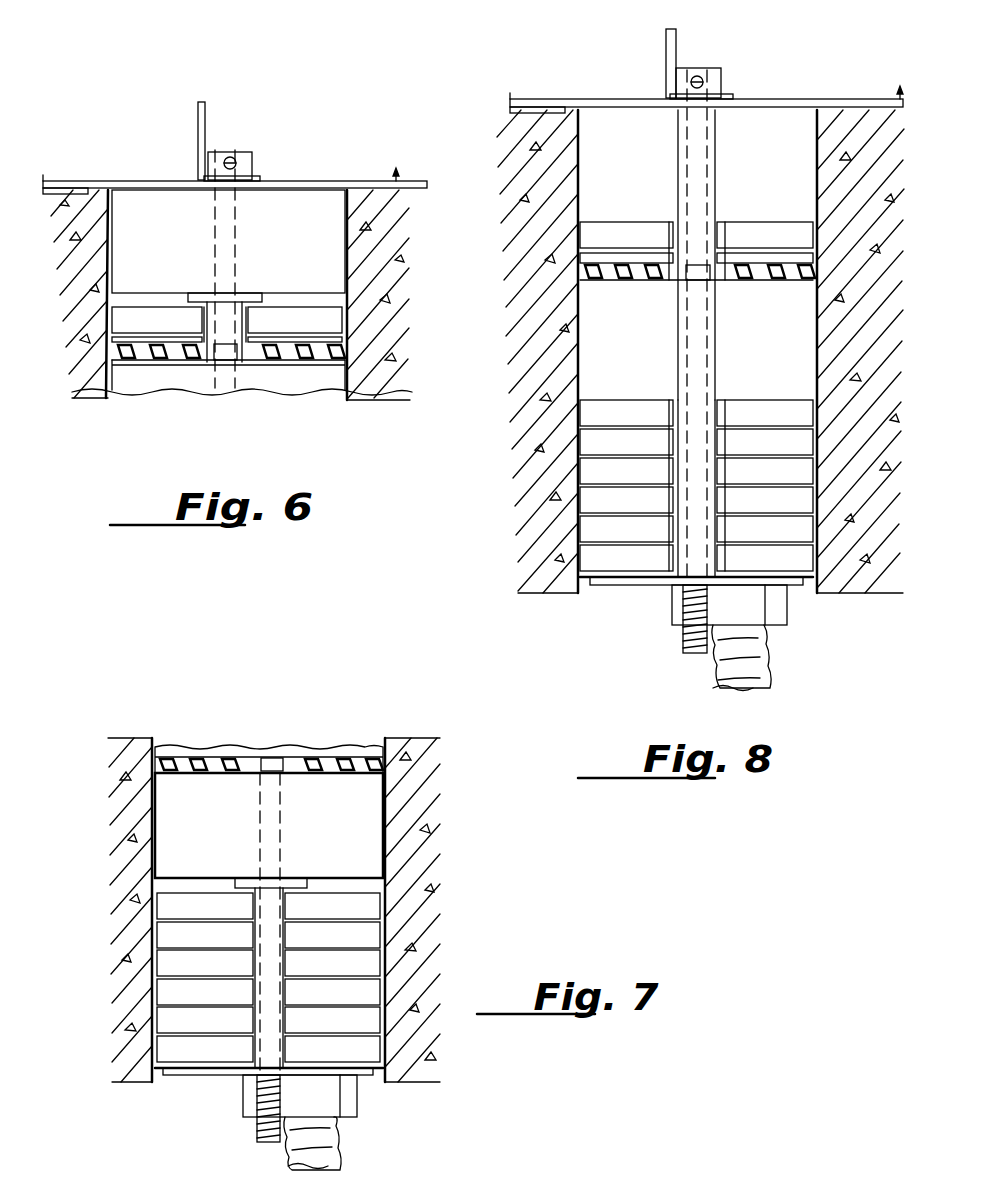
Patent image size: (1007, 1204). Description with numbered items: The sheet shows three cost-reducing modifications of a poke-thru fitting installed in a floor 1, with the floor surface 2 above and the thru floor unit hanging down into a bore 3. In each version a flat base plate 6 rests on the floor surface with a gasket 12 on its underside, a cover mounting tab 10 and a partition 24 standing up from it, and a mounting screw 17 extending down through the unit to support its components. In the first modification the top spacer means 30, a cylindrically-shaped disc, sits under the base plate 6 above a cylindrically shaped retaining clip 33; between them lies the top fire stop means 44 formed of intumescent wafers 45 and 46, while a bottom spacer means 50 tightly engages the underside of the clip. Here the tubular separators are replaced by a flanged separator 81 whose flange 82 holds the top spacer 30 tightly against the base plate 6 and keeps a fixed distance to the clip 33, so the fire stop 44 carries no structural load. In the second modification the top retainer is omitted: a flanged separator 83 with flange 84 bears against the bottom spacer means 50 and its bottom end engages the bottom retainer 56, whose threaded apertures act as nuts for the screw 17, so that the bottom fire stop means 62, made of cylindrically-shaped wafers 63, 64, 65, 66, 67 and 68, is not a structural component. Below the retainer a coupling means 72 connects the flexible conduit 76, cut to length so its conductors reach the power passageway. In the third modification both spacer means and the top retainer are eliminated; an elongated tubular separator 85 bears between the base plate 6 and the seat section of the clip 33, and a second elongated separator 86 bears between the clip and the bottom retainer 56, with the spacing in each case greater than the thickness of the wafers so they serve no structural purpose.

In FIG. 6, the floor 1 is at (383, 350).
In FIG. 8, the floor 1 is at (848, 540).
In FIG. 7, the floor 1 is at (432, 1015).
In FIG. 6, the floor surface 2 is at (410, 188).
In FIG. 8, the floor surface 2 is at (912, 112).
In FIG. 6, the bore 3 is at (358, 310).
In FIG. 8, the bore 3 is at (827, 316).
In FIG. 7, the bore 3 is at (394, 814).
In FIG. 6, the base plate 6 is at (118, 182).
In FIG. 8, the base plate 6 is at (578, 100).
In FIG. 6, the cover mounting tab 10 is at (215, 152).
In FIG. 8, the cover mounting tab 10 is at (688, 70).
In FIG. 6, the gasket 12 is at (76, 188).
In FIG. 8, the gasket 12 is at (527, 110).
In FIG. 6, the mounting screw 17 is at (238, 250).
In FIG. 8, the mounting screw 17 is at (722, 150).
In FIG. 7, the mounting screw 17 is at (283, 815).
In FIG. 6, the partition 24 is at (198, 130).
In FIG. 8, the partition 24 is at (668, 45).
In FIG. 6, the top spacer means 30 is at (130, 243).
In FIG. 6, the retaining clip 33 is at (110, 352).
In FIG. 8, the retaining clip 33 is at (585, 278).
In FIG. 7, the retaining clip 33 is at (228, 760).
In FIG. 8, the top fire stop means 44 is at (657, 229).
In FIG. 6, the wafer 45 is at (122, 318).
In FIG. 8, the wafer 45 is at (595, 232).
In FIG. 6, the wafer 46 is at (118, 340).
In FIG. 8, the wafer 46 is at (595, 260).
In FIG. 7, the wafer 46 is at (207, 750).
In FIG. 6, the bottom spacer means 50 is at (148, 378).
In FIG. 7, the bottom spacer means 50 is at (170, 812).
In FIG. 8, the bottom retainer 56 is at (615, 583).
In FIG. 7, the bottom retainer 56 is at (185, 1073).
In FIG. 8, the bottom fire stop means 62 is at (644, 458).
In FIG. 8, the wafer 63 is at (597, 413).
In FIG. 7, the wafer 63 is at (165, 905).
In FIG. 8, the wafer 64 is at (597, 443).
In FIG. 7, the wafer 64 is at (165, 935).
In FIG. 8, the wafer 65 is at (597, 470).
In FIG. 7, the wafer 65 is at (165, 965).
In FIG. 8, the wafer 66 is at (597, 498).
In FIG. 7, the wafer 66 is at (165, 995).
In FIG. 8, the wafer 67 is at (597, 525).
In FIG. 7, the wafer 67 is at (165, 1023).
In FIG. 8, the wafer 68 is at (597, 555).
In FIG. 7, the wafer 68 is at (165, 1050).
In FIG. 8, the coupling means 72 is at (673, 605).
In FIG. 7, the coupling means 72 is at (248, 1097).
In FIG. 8, the flexible conduit 76 is at (745, 650).
In FIG. 7, the flexible conduit 76 is at (330, 1140).
In FIG. 6, the flanged separator 81 is at (225, 318).
In FIG. 6, the flange 82 is at (200, 295).
In FIG. 7, the flanged separator 83 is at (265, 908).
In FIG. 7, the flange 84 is at (292, 882).
In FIG. 8, the elongated tubular separator 85 is at (715, 190).
In FIG. 8, the elongated tubular separator 86 is at (715, 350).